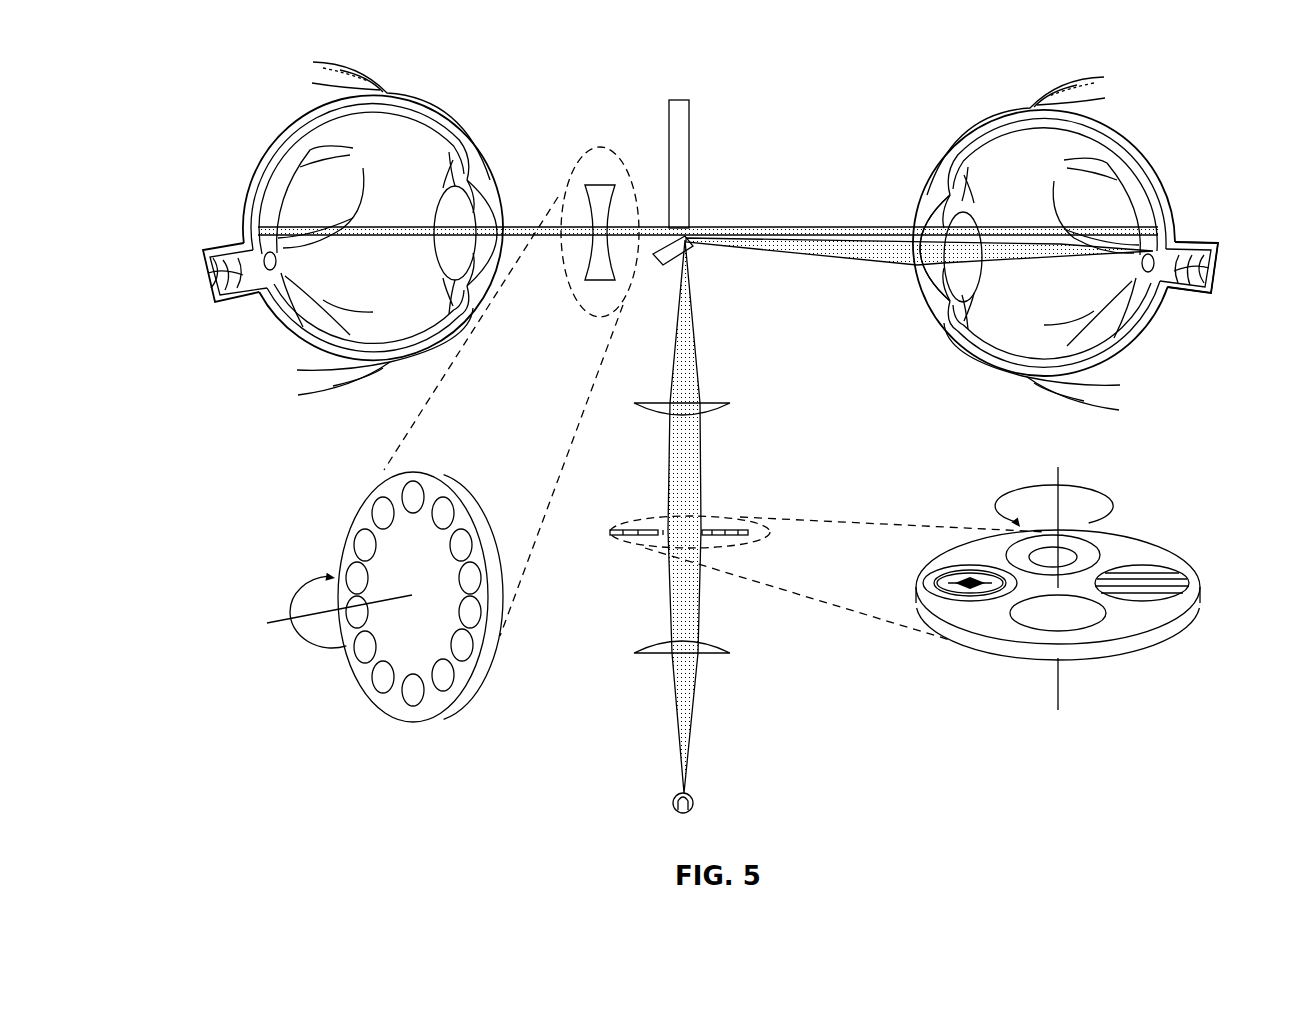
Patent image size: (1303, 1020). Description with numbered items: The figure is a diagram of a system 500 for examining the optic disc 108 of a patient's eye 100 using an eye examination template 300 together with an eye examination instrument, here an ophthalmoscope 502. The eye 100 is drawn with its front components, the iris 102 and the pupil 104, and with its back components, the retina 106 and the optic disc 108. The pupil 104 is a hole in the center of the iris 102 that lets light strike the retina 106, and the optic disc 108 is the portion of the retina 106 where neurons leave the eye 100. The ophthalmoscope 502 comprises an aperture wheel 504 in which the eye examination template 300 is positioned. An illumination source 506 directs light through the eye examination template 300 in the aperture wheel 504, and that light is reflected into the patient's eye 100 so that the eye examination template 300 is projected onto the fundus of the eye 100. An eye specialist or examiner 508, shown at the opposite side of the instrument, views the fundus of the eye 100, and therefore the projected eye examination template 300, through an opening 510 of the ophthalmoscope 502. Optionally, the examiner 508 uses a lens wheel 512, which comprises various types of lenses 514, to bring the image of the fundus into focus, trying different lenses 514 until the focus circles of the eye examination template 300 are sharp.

The system 500 is at (121, 60).
The examiner 508 is at (300, 120).
The ophthalmoscope 502 is at (676, 88).
The opening 510 is at (690, 227).
The eye 100 is at (1000, 147).
The iris 102 is at (938, 218).
The pupil 104 is at (920, 263).
The retina 106 is at (1112, 158).
The optic disc 108 is at (1168, 243).
The lens wheel 512 is at (332, 502).
The lenses 514 is at (363, 545).
The aperture wheel 504 is at (1218, 595).
The eye examination template 300 is at (958, 576).
The illumination source 506 is at (695, 800).